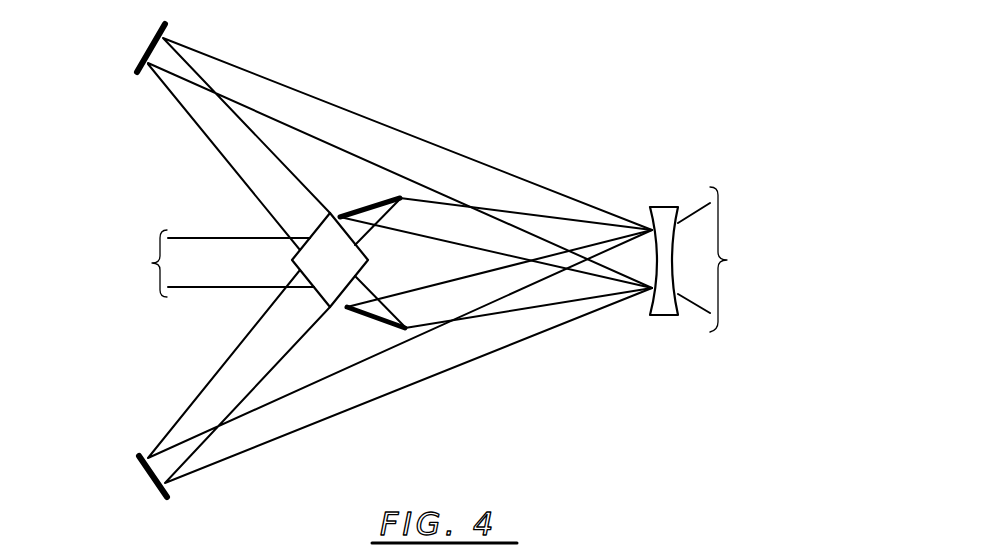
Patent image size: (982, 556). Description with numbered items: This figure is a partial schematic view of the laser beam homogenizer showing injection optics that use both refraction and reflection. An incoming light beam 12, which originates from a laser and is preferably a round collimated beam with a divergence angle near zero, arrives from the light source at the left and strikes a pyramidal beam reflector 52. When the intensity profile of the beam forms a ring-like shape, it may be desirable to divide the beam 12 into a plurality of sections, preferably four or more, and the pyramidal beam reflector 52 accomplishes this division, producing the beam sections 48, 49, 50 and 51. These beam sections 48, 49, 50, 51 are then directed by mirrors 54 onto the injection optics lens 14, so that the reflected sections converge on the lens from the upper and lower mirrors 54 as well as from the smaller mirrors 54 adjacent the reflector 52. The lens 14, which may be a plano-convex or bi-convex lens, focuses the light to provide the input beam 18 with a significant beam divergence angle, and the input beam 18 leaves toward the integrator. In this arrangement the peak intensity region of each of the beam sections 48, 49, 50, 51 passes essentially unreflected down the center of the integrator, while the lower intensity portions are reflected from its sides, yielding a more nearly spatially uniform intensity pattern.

The incoming light beam 12 is at (223, 283).
The injection optics lens 14 is at (662, 318).
The input beam 18 is at (695, 223).
The beam section 48 is at (224, 144).
The beam section 49 is at (221, 378).
The beam section 50 is at (370, 236).
The beam section 51 is at (372, 297).
The pyramidal beam reflector 52 is at (330, 212).
The mirrors 54 is at (151, 38).